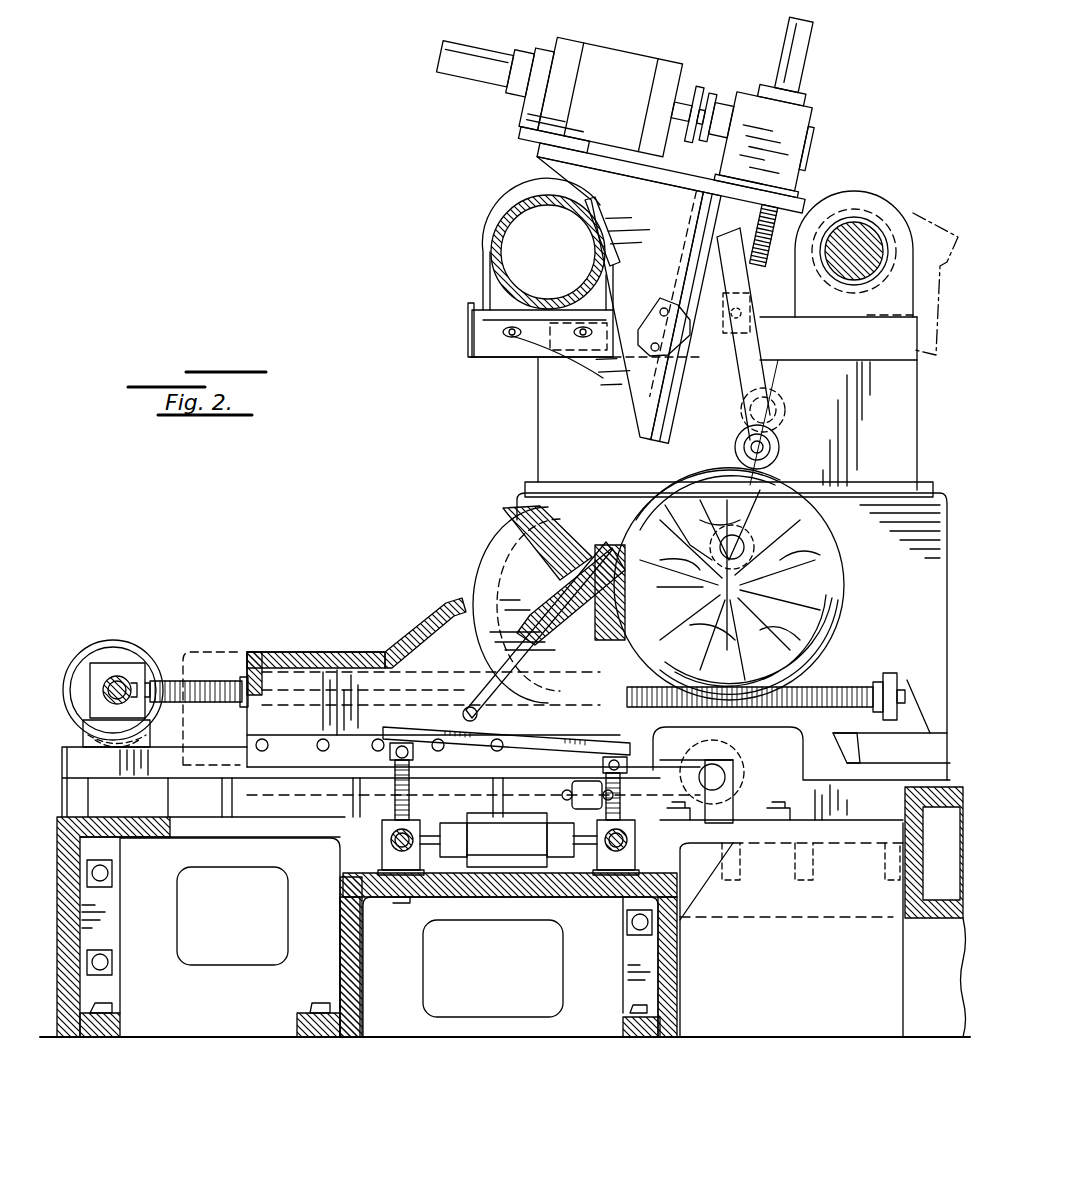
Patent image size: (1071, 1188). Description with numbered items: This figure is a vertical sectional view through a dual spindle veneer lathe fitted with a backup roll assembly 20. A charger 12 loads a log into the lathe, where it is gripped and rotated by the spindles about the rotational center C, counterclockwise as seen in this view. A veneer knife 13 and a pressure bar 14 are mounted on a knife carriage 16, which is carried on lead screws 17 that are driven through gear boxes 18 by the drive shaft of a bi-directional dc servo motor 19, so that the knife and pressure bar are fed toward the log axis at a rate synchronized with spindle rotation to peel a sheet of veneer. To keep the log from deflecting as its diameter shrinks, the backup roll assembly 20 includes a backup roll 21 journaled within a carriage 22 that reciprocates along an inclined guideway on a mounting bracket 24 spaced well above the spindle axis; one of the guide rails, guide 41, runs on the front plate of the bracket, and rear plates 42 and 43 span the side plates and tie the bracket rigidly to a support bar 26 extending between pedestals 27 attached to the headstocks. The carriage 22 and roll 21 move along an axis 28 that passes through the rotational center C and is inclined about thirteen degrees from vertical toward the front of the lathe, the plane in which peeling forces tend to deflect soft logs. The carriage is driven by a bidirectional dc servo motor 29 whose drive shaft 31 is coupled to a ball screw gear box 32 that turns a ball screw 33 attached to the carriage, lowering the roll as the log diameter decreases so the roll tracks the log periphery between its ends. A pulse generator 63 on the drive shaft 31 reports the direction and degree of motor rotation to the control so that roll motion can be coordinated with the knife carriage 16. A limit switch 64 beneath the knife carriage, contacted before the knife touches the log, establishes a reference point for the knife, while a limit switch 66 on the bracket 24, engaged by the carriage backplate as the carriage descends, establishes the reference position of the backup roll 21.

The charger 12 is at (836, 620).
The veneer knife 13 is at (612, 600).
The pressure bar 14 is at (622, 560).
The knife carriage 16 is at (330, 652).
The lead screws 17 is at (213, 683).
The gear boxes 18 is at (123, 662).
The bi-directional dc servo motor 19 is at (95, 650).
The backup roll assembly 20 is at (840, 176).
The backup roll 21 is at (770, 442).
The backup roll carriage 22 is at (768, 348).
The mounting bracket 24 is at (538, 165).
The support bar 26 is at (495, 232).
The pedestals 27 is at (538, 450).
The axis 28 is at (792, 505).
The bidirectional dc servo motor 29 is at (602, 58).
The servo motor drive shaft 31 is at (702, 110).
The ball screw gear box 32 is at (805, 118).
The ball screw 33 is at (748, 250).
The guide 41 is at (670, 423).
The rear plate 42 is at (512, 338).
The rear plate 43 is at (606, 212).
The pulse generator 63 is at (450, 80).
The limit switch 64 is at (587, 810).
The limit switch 66 is at (640, 332).
The rotational center C is at (740, 580).